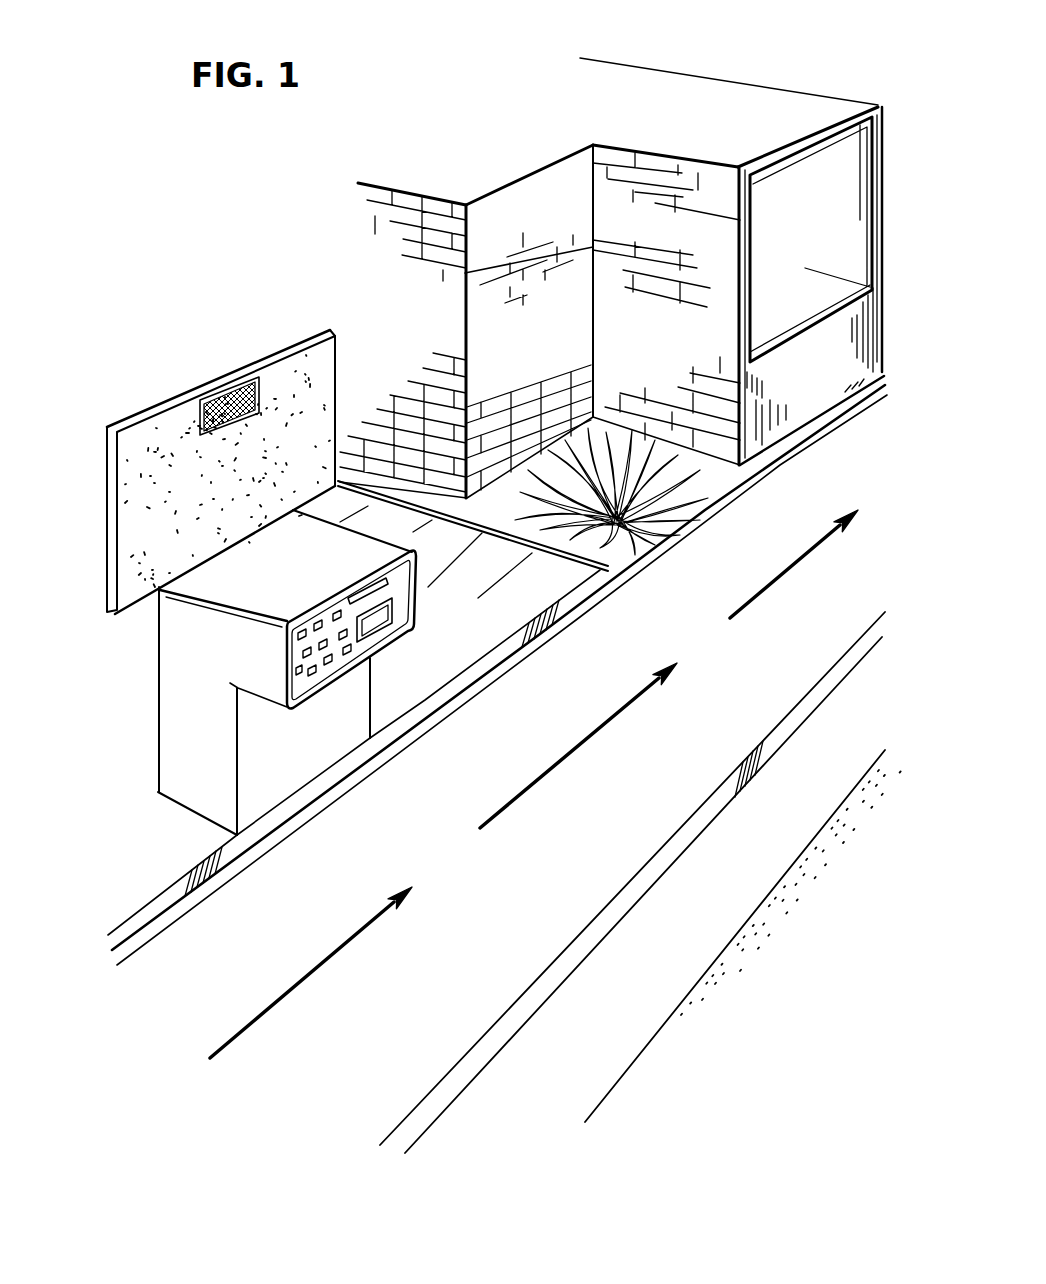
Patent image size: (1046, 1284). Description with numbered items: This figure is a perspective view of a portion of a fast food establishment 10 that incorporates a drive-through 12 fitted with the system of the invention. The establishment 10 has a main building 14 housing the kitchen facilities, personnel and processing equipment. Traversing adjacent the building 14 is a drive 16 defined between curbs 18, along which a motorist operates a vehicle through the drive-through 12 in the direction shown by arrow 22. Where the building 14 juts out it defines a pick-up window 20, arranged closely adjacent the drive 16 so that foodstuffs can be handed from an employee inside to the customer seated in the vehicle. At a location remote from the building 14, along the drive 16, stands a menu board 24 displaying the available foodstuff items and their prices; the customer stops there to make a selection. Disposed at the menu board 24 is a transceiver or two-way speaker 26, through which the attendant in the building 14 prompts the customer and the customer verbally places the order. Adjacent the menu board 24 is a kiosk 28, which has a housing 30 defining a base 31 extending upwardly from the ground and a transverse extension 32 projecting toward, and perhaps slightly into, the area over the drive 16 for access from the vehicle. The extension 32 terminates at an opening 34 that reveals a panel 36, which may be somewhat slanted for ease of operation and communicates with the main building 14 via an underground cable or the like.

The fast food establishment 10 is at (567, 152).
The drive-through 12 is at (206, 975).
The main building 14 is at (542, 335).
The drive 16 is at (534, 753).
The curbs 18 is at (348, 783).
The pick-up window 20 is at (810, 177).
The arrow 22 is at (328, 957).
The menu board 24 is at (291, 348).
The transceiver or 2-way speaker 26 is at (222, 388).
The kiosk 28 is at (155, 695).
The housing 30 is at (318, 753).
The base 31 is at (157, 757).
The transverse extension 32 is at (406, 592).
The opening 34 is at (413, 611).
The panel 36 is at (355, 652).